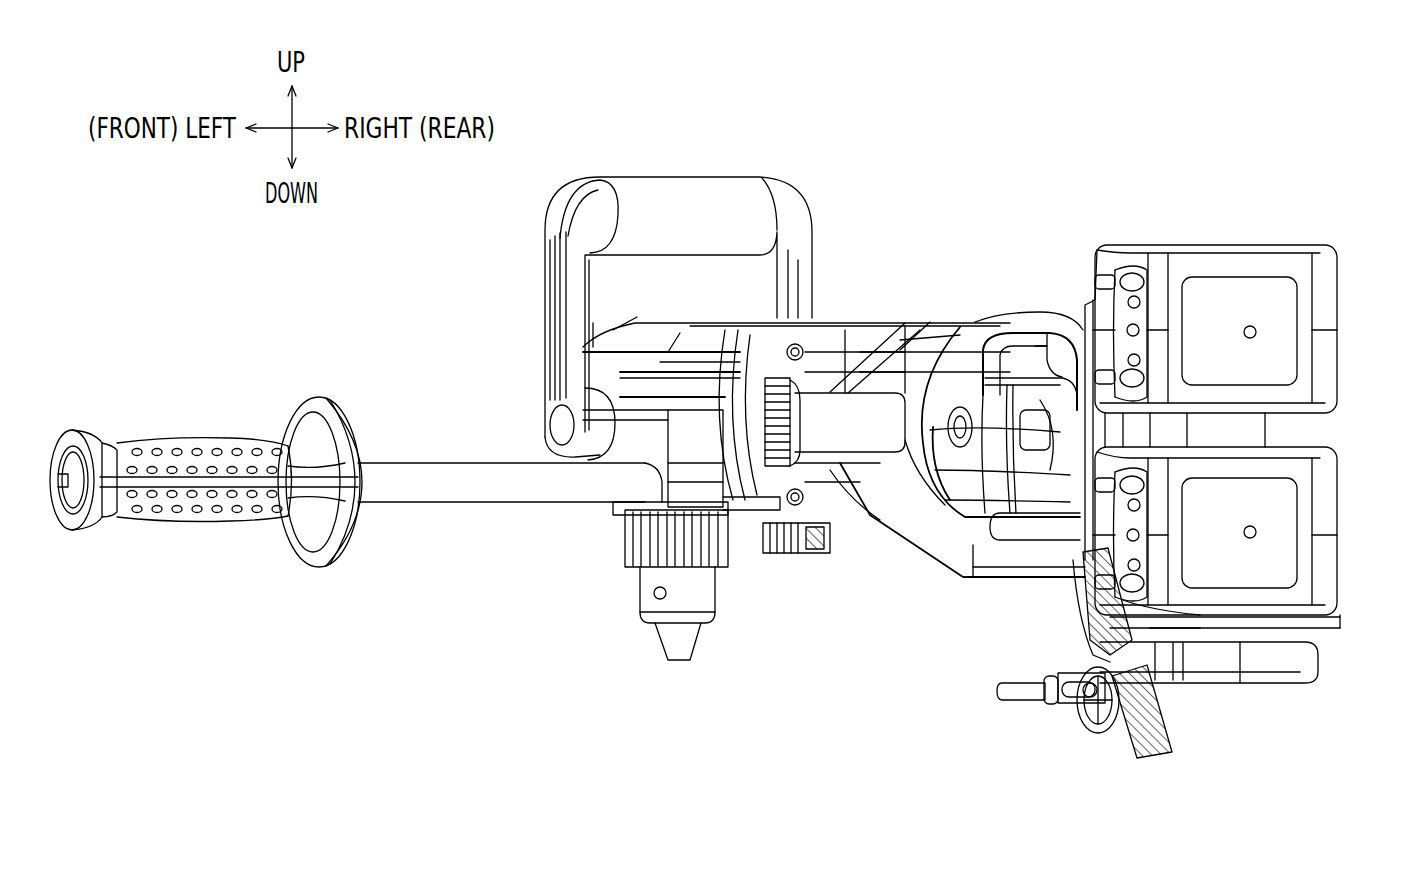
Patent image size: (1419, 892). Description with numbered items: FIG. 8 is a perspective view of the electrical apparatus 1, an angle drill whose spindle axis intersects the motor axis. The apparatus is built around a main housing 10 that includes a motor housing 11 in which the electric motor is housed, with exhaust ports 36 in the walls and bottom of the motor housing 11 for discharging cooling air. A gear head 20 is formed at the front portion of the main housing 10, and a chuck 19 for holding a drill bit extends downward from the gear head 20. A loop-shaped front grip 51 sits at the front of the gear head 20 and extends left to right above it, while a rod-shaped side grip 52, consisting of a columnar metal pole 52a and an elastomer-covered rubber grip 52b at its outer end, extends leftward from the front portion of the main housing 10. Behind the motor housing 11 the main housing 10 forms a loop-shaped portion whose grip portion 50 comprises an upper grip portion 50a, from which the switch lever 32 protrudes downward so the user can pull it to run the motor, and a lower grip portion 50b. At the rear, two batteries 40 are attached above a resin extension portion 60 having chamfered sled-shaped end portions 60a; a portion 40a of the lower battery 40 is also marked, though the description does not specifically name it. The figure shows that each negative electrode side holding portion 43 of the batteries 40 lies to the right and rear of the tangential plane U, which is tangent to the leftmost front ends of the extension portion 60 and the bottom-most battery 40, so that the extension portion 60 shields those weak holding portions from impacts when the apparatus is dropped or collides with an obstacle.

The electrical apparatus 1 is at (856, 148).
The main housing 10 is at (924, 284).
The motor housing 11 is at (850, 330).
The chuck 19 is at (650, 608).
The gear head 20 is at (638, 330).
The switch lever 32 is at (910, 500).
The exhaust ports 36 is at (737, 510).
The battery 40 is at (1282, 265).
The battery pack bottom portion 40a is at (1232, 627).
The negative electrode side holding portion 43 is at (1176, 642).
The grip portion 50 is at (1017, 306).
The upper grip portion 50a is at (1048, 302).
The lower grip portion 50b is at (977, 565).
The front grip 51 is at (598, 210).
The side grip 52 is at (402, 438).
The pole 52a is at (445, 488).
The rubber grip 52b is at (207, 505).
The extension portion 60 is at (1302, 652).
The end portions 60a is at (1272, 690).
The tangential plane U is at (1084, 669).